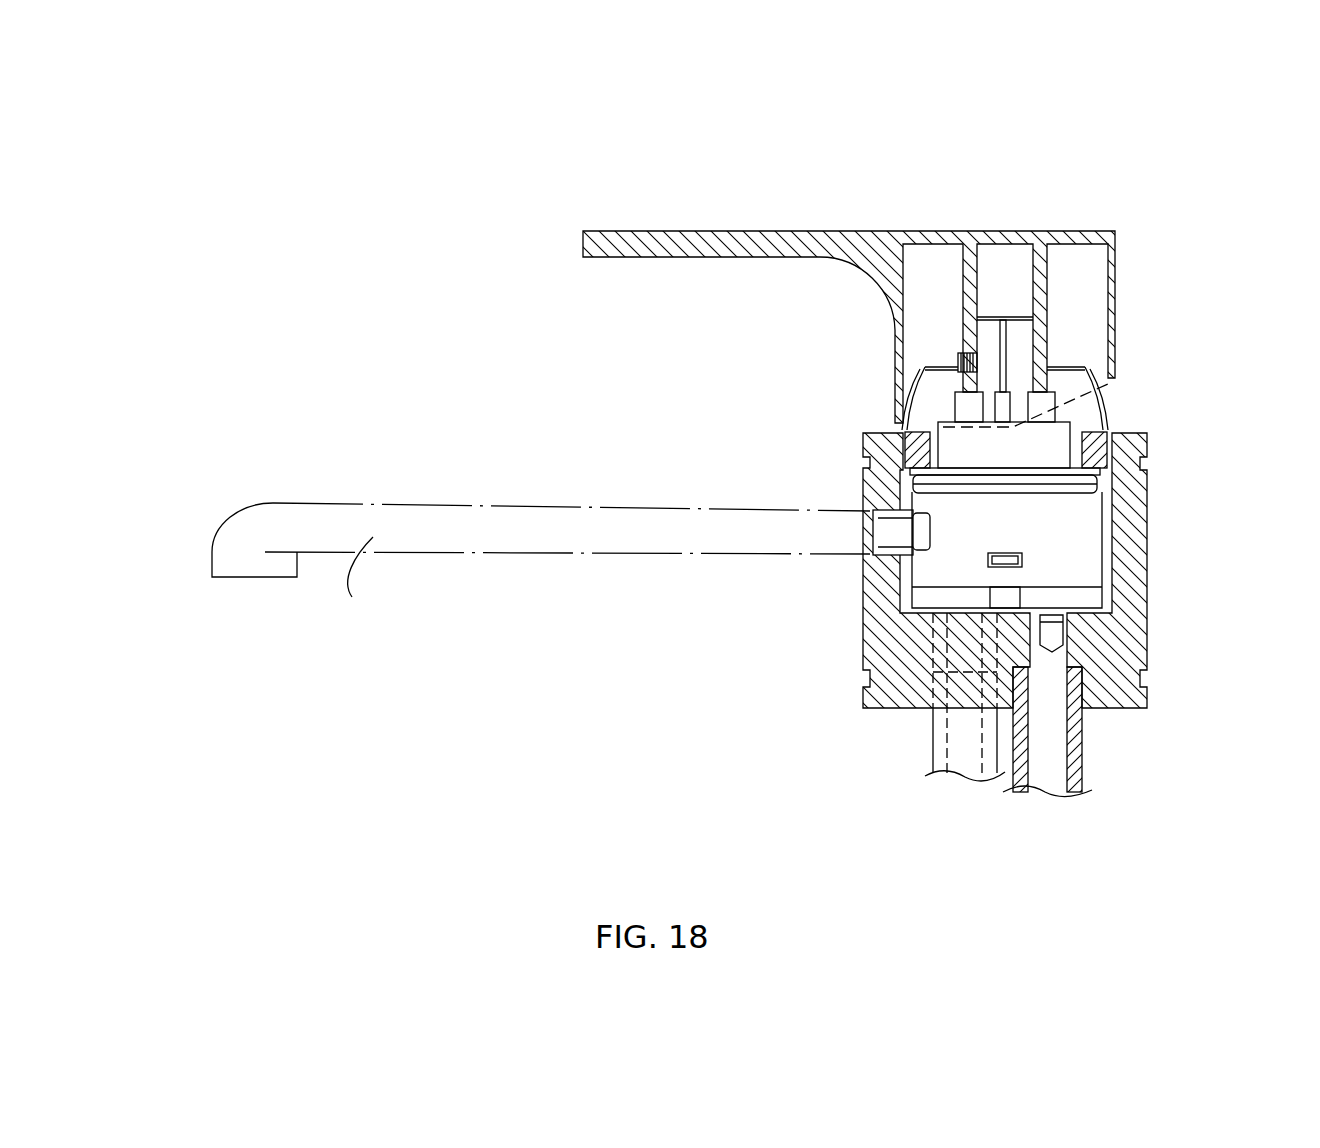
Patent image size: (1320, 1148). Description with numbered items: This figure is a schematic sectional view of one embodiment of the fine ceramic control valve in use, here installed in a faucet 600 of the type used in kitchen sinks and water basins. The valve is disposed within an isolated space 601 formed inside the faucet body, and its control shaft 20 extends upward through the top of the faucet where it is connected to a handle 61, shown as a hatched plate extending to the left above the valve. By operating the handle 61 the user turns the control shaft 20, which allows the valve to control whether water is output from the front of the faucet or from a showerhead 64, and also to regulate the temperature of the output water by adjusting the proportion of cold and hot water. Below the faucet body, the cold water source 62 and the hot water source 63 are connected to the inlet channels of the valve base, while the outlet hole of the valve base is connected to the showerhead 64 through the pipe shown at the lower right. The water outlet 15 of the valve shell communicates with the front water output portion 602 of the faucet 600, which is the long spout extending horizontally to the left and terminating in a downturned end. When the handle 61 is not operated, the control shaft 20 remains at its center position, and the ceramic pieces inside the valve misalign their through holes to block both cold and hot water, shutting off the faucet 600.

The handle 61 is at (712, 233).
The control shaft 20 is at (1023, 337).
The water outlet 15 is at (857, 476).
The isolated space 601 is at (1107, 533).
The faucet 600 is at (597, 458).
The front water output portion 602 is at (357, 609).
The cold water source 62 is at (865, 708).
The hot water source 63 is at (957, 737).
The showerhead 64 is at (1063, 742).